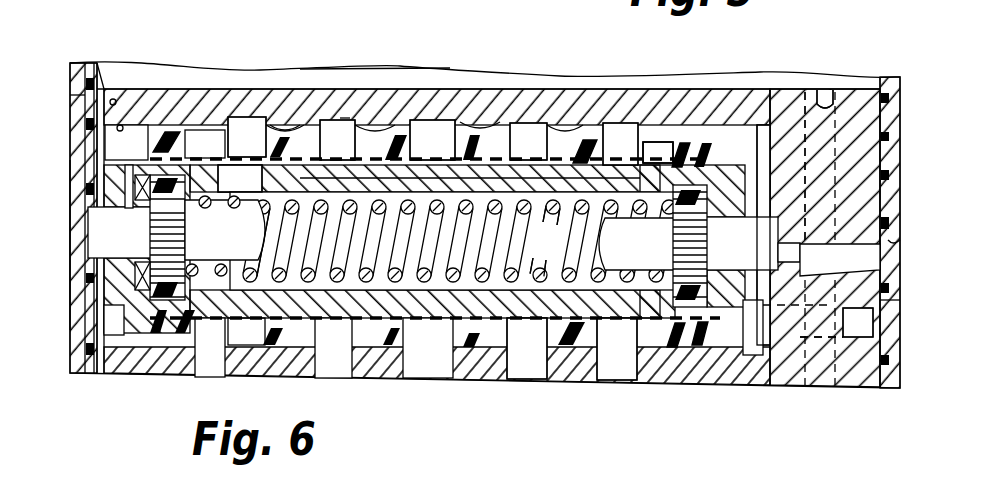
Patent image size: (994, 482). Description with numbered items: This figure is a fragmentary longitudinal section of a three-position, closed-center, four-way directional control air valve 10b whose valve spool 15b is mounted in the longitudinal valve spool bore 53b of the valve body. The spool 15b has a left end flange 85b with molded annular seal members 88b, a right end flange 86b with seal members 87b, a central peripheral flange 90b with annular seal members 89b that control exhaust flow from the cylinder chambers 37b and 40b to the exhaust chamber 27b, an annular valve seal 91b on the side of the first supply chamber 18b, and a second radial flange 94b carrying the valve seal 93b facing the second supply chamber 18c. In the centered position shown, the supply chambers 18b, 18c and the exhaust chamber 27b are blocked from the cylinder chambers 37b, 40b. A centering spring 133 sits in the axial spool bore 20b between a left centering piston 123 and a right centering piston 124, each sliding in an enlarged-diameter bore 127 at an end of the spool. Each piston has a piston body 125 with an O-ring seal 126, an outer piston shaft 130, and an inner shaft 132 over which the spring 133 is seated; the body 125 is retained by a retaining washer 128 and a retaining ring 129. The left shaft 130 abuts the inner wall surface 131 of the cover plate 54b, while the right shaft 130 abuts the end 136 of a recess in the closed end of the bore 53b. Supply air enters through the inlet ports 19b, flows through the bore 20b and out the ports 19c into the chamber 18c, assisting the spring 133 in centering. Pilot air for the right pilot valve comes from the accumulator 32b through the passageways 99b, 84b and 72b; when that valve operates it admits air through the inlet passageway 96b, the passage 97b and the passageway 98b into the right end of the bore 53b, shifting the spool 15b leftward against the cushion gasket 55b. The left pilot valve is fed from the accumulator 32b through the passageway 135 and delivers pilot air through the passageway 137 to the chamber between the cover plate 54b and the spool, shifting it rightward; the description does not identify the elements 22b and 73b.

The brake assembly 10b is at (74, 60).
The cushion gasket 55b is at (95, 65).
The passageway 135 is at (112, 98).
The valve spool bore 53b is at (120, 125).
The cover plate 54b is at (80, 98).
The retaining ring 129 is at (83, 160).
The annular seal member 88b is at (185, 138).
The peripheral flange 85b is at (205, 138).
The air supply chamber 18b is at (250, 118).
The cylinder 22b is at (320, 130).
The accumulator 32b is at (378, 75).
The annular seal member 89b is at (432, 125).
The exhaust chamber 27b is at (432, 125).
The cylinder chamber 40b is at (522, 125).
The valve spool 15b is at (565, 140).
The annular valve seal 93b is at (612, 130).
The air supply chamber 18c is at (622, 140).
The annular seal member 87b is at (702, 150).
The centering piston 124 is at (752, 160).
The passageway 99b is at (818, 98).
The retaining washer 128 is at (160, 116).
The annular valve seal 91b is at (285, 133).
The cylinder chamber 37b is at (345, 117).
The ring 73b is at (365, 130).
The annular radial flange 94b is at (590, 118).
The peripheral flange 86b is at (650, 140).
The piston shaft 130 is at (48, 243).
The inlet ports 19b is at (262, 176).
The peripheral flange 90b is at (400, 176).
The piston body 125 is at (215, 232).
The inner shaft 132 is at (287, 243).
The ports 19c is at (598, 218).
The centering piston 123 is at (103, 233).
The inner wall surface 131 is at (82, 290).
The passageway 137 is at (82, 320).
The end of recess 136 is at (790, 222).
The passageway 84b is at (893, 238).
The passageway 72b is at (893, 242).
The inlet passageway 96b is at (898, 305).
The O-ring seal 126 is at (125, 345).
The piston bore 127 is at (185, 345).
The centering spring 133 is at (407, 258).
The axial spool bore 20b is at (530, 320).
The passageway 98b is at (788, 340).
The passage 97b is at (858, 330).